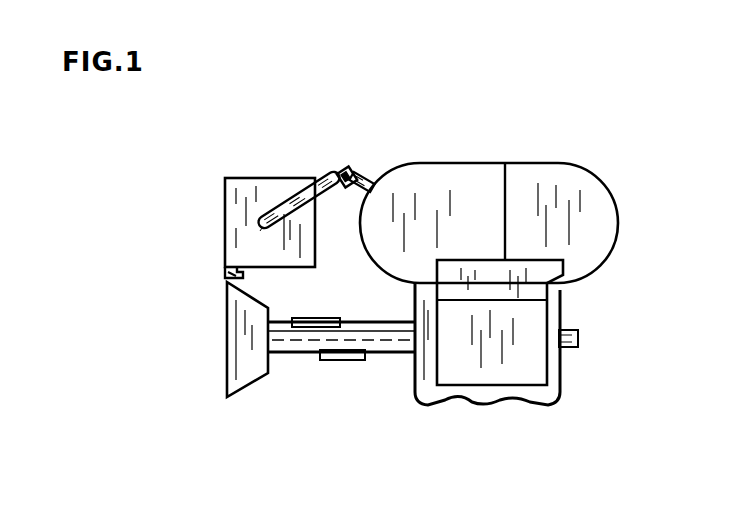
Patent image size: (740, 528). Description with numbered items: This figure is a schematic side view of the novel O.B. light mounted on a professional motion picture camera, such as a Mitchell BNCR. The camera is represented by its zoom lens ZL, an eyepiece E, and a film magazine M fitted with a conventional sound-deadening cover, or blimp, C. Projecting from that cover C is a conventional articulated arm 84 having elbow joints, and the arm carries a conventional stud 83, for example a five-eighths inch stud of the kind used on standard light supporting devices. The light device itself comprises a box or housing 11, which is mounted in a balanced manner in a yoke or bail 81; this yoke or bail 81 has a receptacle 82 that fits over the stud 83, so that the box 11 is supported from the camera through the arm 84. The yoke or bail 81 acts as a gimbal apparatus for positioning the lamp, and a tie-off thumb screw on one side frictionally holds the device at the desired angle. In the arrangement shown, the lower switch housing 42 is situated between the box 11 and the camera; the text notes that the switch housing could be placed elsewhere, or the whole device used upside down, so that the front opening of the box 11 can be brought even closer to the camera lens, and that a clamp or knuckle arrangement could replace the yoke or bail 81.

The box or housing 11 is at (255, 208).
The lower switch housing 42 is at (244, 277).
The yoke or bail 81 is at (312, 205).
The receptacle 82 is at (330, 173).
The stud 83 is at (345, 171).
The articulated arm 84 is at (370, 178).
The sound-deadening cover (blimp) C is at (462, 192).
The film magazine M is at (597, 242).
The eyepiece E is at (578, 333).
The zoom lens ZL is at (413, 422).